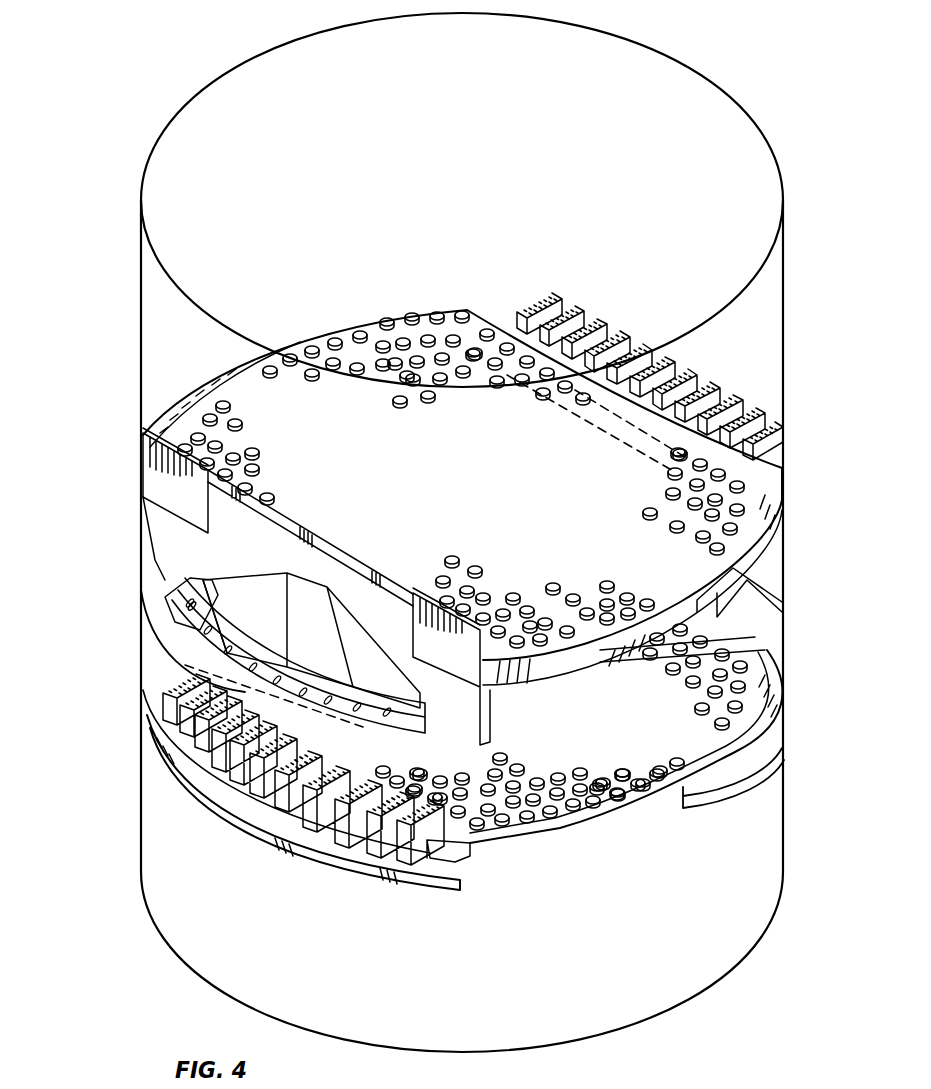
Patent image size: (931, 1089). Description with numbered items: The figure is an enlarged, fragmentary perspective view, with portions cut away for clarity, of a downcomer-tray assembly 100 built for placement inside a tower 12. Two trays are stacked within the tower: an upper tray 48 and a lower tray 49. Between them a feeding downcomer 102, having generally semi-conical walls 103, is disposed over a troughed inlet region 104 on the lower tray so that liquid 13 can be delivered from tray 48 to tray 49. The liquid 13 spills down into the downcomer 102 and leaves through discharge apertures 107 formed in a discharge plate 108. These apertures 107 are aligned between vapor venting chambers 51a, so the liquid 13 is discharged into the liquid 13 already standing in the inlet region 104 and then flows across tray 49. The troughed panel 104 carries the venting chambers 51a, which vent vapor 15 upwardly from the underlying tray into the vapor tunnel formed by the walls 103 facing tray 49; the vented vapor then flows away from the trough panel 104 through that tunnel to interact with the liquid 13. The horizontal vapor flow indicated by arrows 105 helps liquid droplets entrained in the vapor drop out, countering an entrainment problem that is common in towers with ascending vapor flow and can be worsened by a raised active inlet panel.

The downcomer-tray assembly 100 is at (363, 215).
The tower 12 is at (789, 348).
The liquid 13 is at (307, 572).
The vapor 15 is at (338, 770).
The tray 48 is at (710, 558).
The tray 49 is at (782, 754).
The vapor venting chambers 51a is at (318, 748).
The feeding downcomer 102 is at (255, 562).
The semi-conical walls 103 is at (340, 625).
The troughed inlet region 104 is at (427, 868).
The arrows 105 is at (492, 712).
The discharge apertures 107 is at (183, 630).
The discharge plate 108 is at (175, 593).